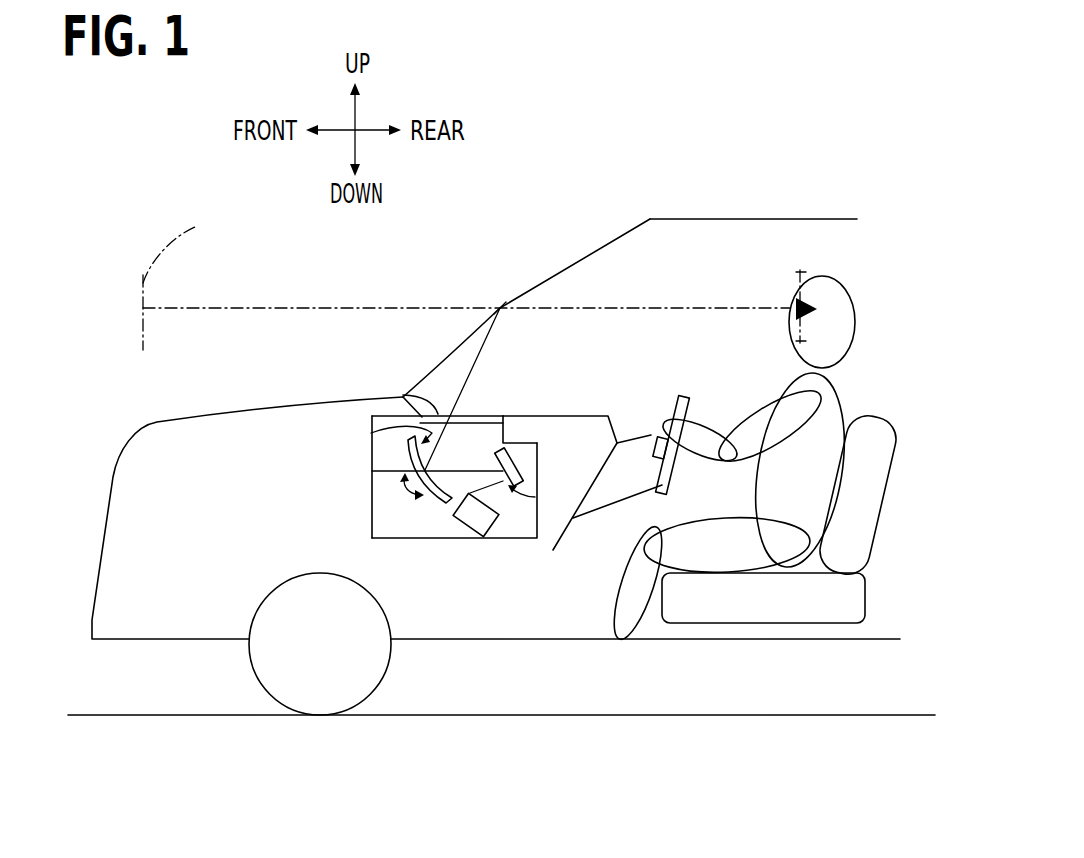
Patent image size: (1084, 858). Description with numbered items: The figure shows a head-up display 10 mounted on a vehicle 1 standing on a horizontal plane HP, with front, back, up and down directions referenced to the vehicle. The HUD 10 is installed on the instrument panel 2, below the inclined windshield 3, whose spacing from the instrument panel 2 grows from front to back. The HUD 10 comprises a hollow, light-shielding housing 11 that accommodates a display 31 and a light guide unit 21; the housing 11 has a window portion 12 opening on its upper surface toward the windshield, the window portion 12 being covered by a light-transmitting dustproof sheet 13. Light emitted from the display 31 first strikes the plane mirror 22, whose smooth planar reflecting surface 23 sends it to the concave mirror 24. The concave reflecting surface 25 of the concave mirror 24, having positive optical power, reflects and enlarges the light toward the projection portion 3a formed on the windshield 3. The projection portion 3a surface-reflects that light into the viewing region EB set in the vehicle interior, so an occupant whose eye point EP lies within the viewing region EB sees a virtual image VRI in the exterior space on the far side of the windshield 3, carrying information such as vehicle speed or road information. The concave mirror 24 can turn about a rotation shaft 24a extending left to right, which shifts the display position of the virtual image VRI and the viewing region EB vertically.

The vehicle 1 is at (824, 219).
The instrument panel 2 is at (579, 413).
The windshield 3 is at (569, 262).
The projection portion 3a is at (523, 298).
The head-up display 10 is at (405, 543).
The housing 11 is at (372, 530).
The window portion 12 is at (418, 390).
The dustproof sheet 13 is at (497, 416).
The light guide unit 21 is at (577, 349).
The plane mirror 22 is at (514, 462).
The reflecting surface 23 is at (535, 497).
The concave mirror 24 is at (428, 468).
The rotation shaft 24a is at (372, 471).
The reflecting surface 25 is at (371, 433).
The display 31 is at (462, 538).
The eye point EP is at (795, 306).
The viewing region EB is at (803, 272).
The virtual image VRI is at (466, 277).
The horizontal plane HP is at (937, 714).